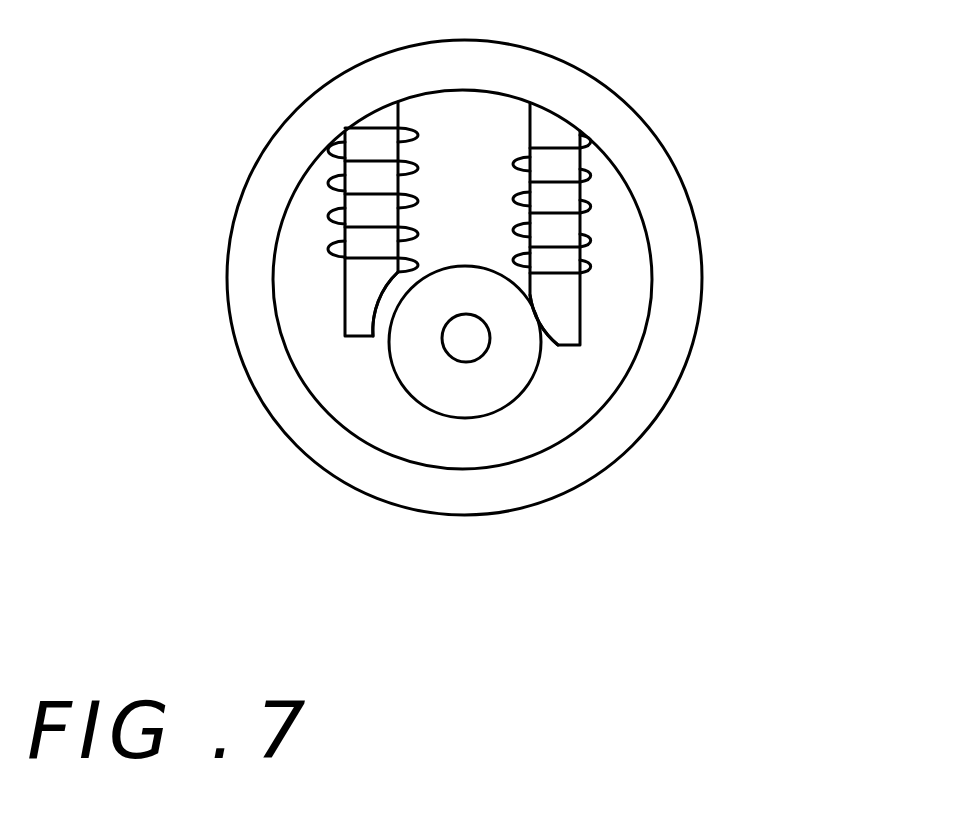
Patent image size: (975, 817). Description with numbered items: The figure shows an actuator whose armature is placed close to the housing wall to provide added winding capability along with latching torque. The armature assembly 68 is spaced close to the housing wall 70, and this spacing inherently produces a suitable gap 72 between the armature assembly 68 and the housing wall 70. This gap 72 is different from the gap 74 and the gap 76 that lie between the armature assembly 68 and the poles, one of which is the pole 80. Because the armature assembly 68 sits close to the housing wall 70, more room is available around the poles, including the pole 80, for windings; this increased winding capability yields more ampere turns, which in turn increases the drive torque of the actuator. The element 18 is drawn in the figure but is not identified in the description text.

The electromagnet pole piece 18 is at (557, 137).
The permanent magnet rotor 68 is at (512, 367).
The outer housing 70 is at (587, 425).
The stator ring 72 is at (467, 437).
The pole face 74 is at (540, 313).
The pole face 76 is at (383, 311).
The electromagnet coil 80 is at (390, 112).